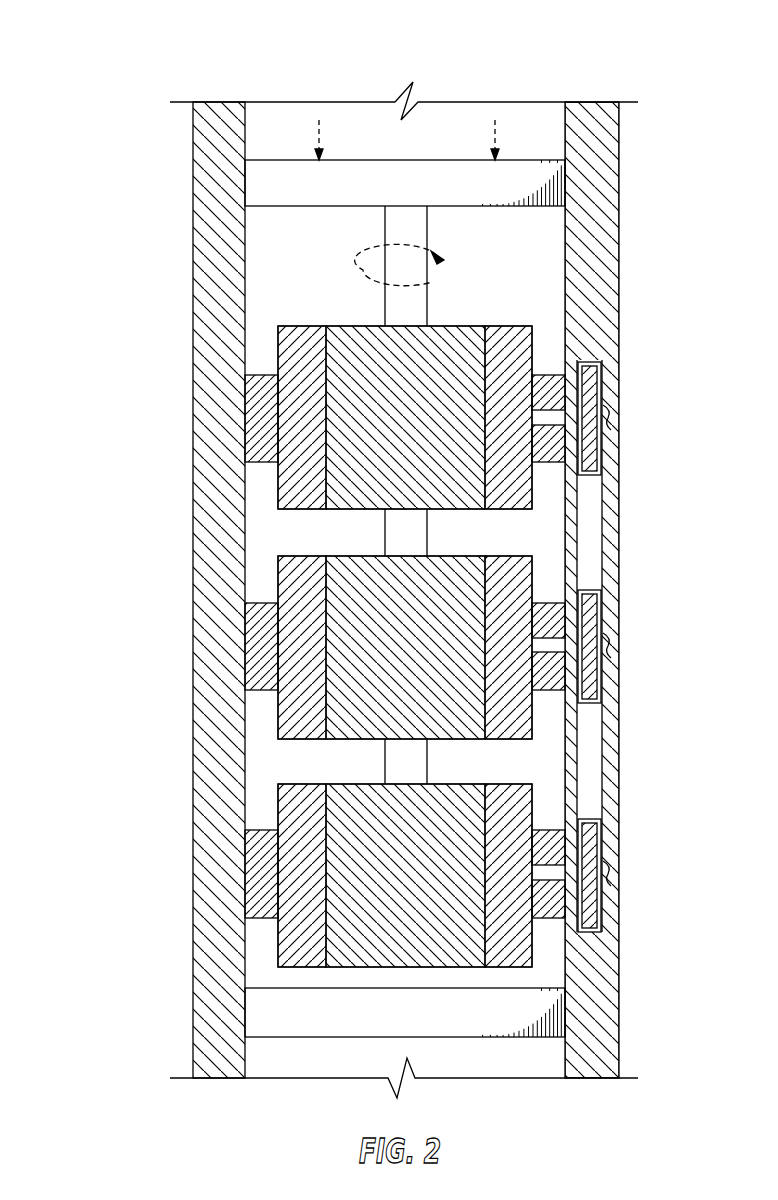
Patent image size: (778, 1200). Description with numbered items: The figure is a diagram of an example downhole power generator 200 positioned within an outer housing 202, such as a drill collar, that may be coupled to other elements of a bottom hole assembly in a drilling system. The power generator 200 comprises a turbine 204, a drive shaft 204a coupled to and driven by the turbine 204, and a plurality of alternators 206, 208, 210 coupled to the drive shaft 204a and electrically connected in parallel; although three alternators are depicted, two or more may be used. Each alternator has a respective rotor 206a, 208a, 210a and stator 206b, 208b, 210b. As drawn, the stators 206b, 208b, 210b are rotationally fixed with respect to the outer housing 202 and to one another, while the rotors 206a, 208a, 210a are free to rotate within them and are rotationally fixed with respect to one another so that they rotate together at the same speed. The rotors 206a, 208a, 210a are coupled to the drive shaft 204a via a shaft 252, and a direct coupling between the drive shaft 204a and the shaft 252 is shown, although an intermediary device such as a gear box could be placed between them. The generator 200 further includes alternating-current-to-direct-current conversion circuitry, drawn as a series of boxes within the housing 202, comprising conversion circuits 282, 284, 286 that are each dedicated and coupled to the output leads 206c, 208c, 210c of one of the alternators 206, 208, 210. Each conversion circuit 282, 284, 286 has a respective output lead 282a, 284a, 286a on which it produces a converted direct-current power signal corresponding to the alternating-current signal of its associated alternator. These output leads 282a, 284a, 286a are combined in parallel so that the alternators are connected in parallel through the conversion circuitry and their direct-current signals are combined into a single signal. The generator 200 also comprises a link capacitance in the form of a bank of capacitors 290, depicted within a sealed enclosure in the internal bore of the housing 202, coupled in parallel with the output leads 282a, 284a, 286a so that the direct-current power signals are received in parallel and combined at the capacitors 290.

The downhole power generator 200 is at (609, 50).
The outer housing 202 is at (193, 218).
The turbine 204 is at (382, 160).
The drive shaft 204a is at (427, 226).
The alternator 206 is at (404, 393).
The rotor 206a is at (358, 383).
The stator 206b is at (300, 437).
The output lead 206c is at (548, 407).
The alternator 208 is at (404, 636).
The rotor 208a is at (358, 608).
The stator 208b is at (300, 660).
The output lead 208c is at (548, 636).
The alternator 210 is at (404, 850).
The rotor 210a is at (358, 833).
The stator 210b is at (300, 885).
The output lead 210c is at (548, 862).
The shaft 252 is at (436, 532).
The AC-to-DC conversion circuit 282 is at (593, 407).
The output lead 282a is at (608, 436).
The AC-to-DC conversion circuit 284 is at (593, 634).
The output lead 284a is at (608, 664).
The AC-to-DC conversion circuit 286 is at (593, 862).
The output lead 286a is at (608, 892).
The bank of capacitors 290 is at (540, 1014).